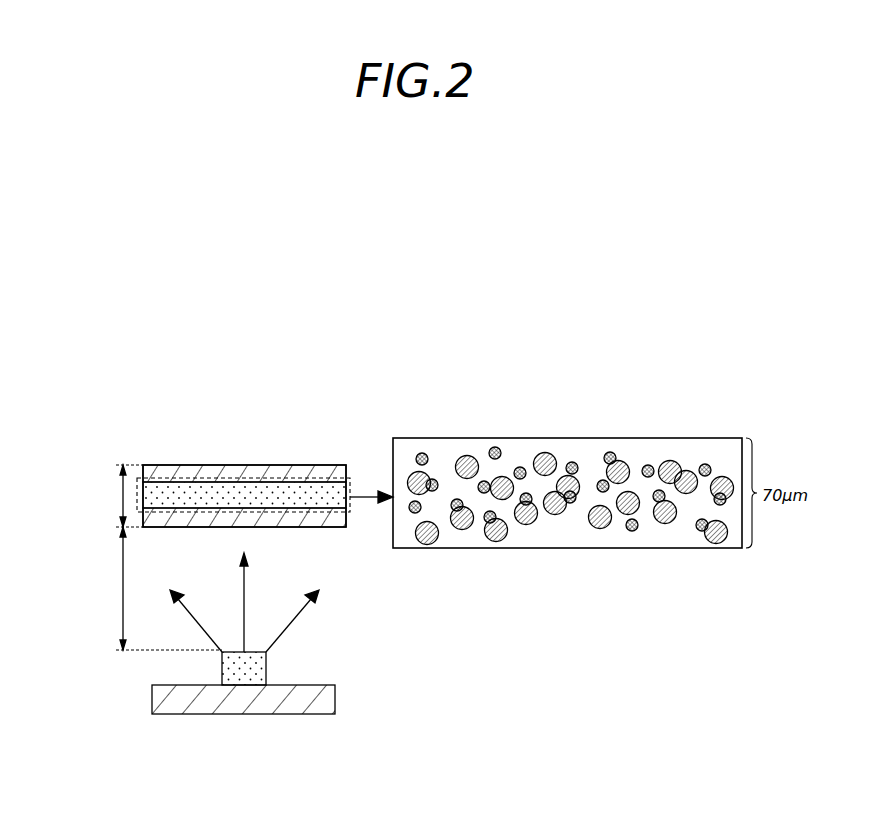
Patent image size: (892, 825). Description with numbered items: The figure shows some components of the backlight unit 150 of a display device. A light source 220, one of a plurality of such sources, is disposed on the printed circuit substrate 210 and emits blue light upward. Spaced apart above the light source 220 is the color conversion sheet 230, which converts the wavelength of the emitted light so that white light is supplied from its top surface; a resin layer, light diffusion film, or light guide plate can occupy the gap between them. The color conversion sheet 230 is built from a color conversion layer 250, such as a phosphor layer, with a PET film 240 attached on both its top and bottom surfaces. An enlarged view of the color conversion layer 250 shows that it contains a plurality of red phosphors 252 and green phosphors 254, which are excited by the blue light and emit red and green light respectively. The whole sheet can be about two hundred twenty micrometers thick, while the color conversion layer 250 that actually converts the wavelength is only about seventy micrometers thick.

The backlight unit 150 is at (158, 347).
The printed circuit substrate 210 is at (336, 700).
The light source 220 is at (268, 668).
The color conversion sheet 230 is at (237, 405).
The PET film 240 is at (174, 516).
The color conversion layer 250 is at (220, 491).
The red phosphor 252 is at (468, 455).
The green phosphor 254 is at (520, 466).